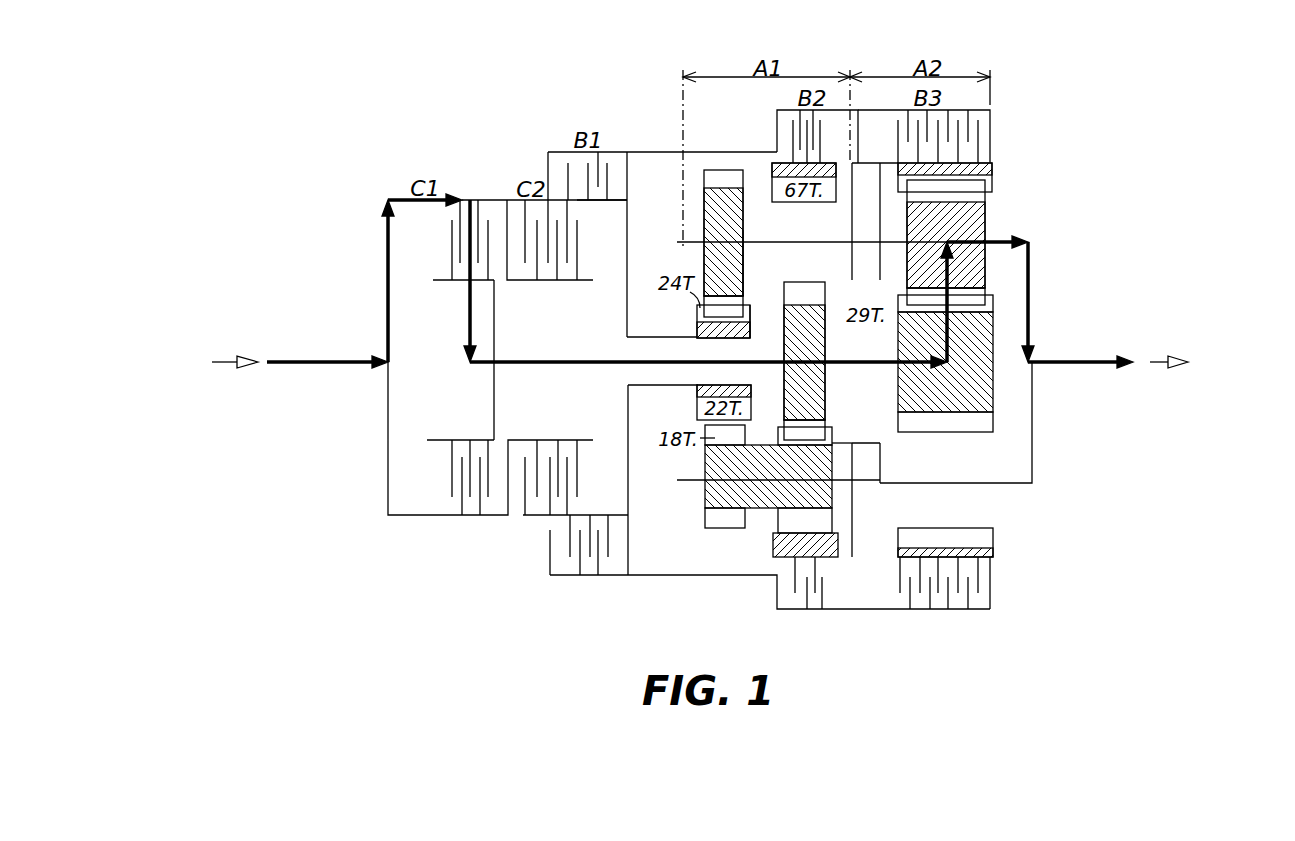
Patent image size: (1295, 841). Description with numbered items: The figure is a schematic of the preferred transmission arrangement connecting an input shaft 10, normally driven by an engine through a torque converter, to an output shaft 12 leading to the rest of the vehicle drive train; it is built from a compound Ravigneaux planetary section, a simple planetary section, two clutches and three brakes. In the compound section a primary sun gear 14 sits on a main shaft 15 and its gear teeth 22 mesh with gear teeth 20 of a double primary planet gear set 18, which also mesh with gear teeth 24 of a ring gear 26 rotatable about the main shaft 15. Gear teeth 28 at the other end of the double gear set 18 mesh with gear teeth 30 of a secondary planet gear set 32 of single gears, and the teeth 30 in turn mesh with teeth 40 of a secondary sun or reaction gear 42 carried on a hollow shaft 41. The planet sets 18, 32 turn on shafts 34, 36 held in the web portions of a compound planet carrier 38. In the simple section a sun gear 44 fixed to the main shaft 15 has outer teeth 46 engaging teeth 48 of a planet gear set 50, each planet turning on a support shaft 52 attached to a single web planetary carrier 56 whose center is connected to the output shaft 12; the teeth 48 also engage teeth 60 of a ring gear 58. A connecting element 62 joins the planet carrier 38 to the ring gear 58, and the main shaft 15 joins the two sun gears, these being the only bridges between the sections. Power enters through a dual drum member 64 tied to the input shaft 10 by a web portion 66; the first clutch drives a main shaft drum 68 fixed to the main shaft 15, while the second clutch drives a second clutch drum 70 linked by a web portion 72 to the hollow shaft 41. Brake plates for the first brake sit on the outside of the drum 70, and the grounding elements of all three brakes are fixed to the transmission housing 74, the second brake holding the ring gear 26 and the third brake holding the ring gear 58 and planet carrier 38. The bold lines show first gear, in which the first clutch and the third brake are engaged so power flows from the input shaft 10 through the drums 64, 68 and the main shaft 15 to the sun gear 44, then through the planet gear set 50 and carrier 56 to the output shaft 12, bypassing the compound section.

The input shaft 10 is at (352, 360).
The output shaft 12 is at (1095, 361).
The primary sun gear 14 is at (825, 345).
The main shaft 15 is at (554, 360).
The primary planet gear set 18 is at (765, 510).
The gear teeth 20 is at (836, 446).
The gear teeth 22 is at (820, 420).
The gear teeth 24 is at (838, 528).
The ring gear 26 is at (835, 560).
The gear teeth 28 is at (715, 530).
The gear teeth 30 is at (703, 178).
The secondary planet gear set 32 is at (745, 264).
The planet gear shaft 34 is at (700, 478).
The planet gear shaft 36 is at (812, 242).
The compound planet carrier 38 is at (853, 215).
The teeth 40 is at (697, 320).
The hollow shaft 41 is at (633, 337).
The secondary sun gear 42 is at (752, 325).
The sun gear 44 is at (993, 325).
The teeth 46 is at (965, 432).
The teeth 48 is at (990, 297).
The planet gear set 50 is at (995, 238).
The support shaft 52 is at (897, 247).
The single web planetary carrier 56 is at (1032, 450).
The ring gear 58 is at (995, 555).
The teeth 60 is at (995, 535).
The connecting element 62 is at (877, 158).
The dual drum member 64 is at (485, 200).
The web portion 66 is at (388, 262).
The main shaft drum 68 is at (440, 283).
The second clutch drum 70 is at (597, 205).
The web portion 72 is at (627, 302).
The transmission housing 74 is at (718, 152).